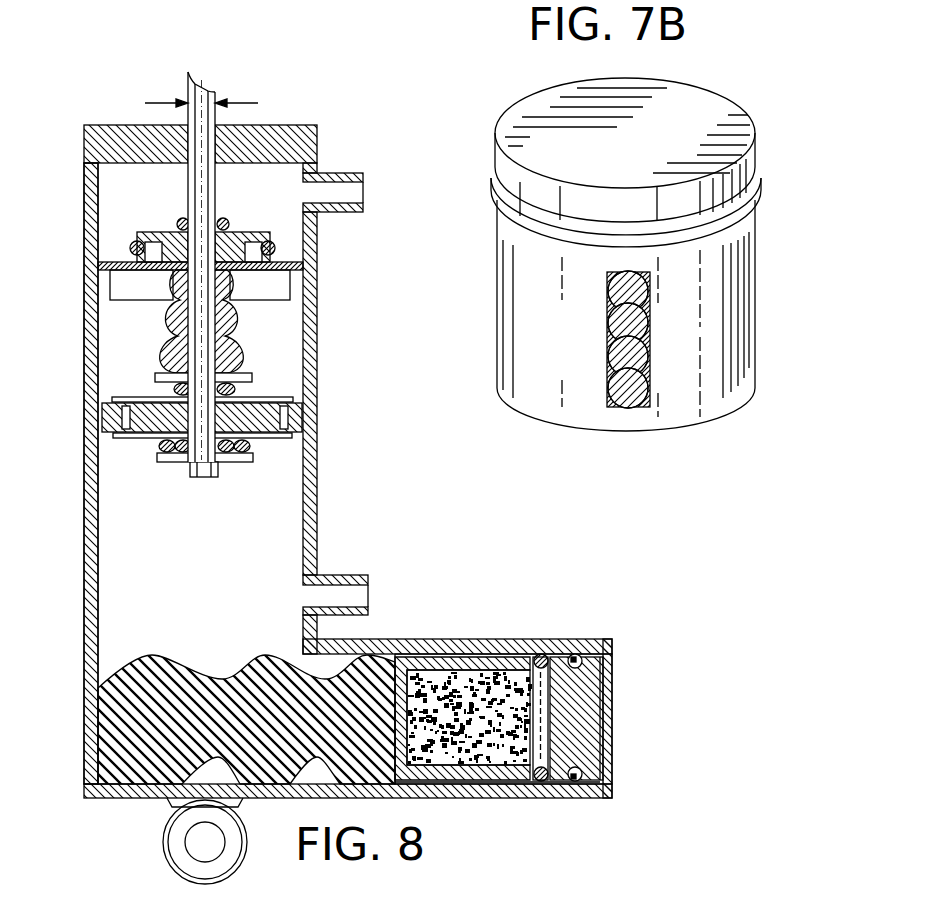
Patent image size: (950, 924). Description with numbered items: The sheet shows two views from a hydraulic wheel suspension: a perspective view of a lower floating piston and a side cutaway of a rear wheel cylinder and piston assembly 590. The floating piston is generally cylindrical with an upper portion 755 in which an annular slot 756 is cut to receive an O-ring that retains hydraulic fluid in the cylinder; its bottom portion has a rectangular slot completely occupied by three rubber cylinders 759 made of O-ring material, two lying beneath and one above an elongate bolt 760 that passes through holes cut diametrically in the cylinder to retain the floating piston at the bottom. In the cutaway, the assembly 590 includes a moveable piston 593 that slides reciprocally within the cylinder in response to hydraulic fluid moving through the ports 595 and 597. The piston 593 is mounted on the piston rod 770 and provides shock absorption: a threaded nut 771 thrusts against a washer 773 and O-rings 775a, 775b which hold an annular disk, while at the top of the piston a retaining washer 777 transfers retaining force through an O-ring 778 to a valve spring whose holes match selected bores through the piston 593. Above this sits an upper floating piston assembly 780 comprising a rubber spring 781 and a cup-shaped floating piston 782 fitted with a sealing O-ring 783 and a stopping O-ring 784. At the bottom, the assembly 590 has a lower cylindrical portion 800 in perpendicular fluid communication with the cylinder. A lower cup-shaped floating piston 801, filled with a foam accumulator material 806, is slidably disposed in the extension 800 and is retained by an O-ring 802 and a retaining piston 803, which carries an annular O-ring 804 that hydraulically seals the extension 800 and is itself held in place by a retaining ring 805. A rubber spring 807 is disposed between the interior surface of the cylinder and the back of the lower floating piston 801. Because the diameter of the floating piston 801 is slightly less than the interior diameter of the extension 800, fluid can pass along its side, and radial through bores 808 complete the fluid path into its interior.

In FIG. 8, the piston rod 770 is at (188, 93).
In FIG. 8, the cup-shaped floating piston 782 is at (105, 262).
In FIG. 8, the stopping O-ring 784 is at (177, 224).
In FIG. 8, the sealing O-ring 783 is at (270, 246).
In FIG. 8, the port 595 is at (347, 173).
In FIG. 8, the rear wheel cylinder and piston assembly 590 is at (317, 302).
In FIG. 8, the upper floating piston assembly 780 is at (106, 306).
In FIG. 8, the rubber spring 781 is at (168, 335).
In FIG. 8, the retaining washer 777 is at (250, 373).
In FIG. 8, the O-ring 778 is at (235, 389).
In FIG. 8, the moveable piston 593 is at (135, 448).
In FIG. 8, the washer 773 is at (167, 462).
In FIG. 8, the threaded nut 771 is at (202, 477).
In FIG. 8, the O-ring 775a is at (234, 462).
In FIG. 8, the O-ring 775b is at (250, 451).
In FIG. 8, the port 597 is at (368, 581).
In FIG. 8, the rubber spring 807 is at (178, 653).
In FIG. 8, the lower cylindrical portion 800 is at (467, 639).
In FIG. 8, the foam accumulator material 806 is at (522, 657).
In FIG. 8, the O-ring 802 is at (541, 655).
In FIG. 8, the annular O-ring 804 is at (582, 652).
In FIG. 8, the retaining ring 805 is at (605, 662).
In FIG. 8, the retaining piston 803 is at (612, 733).
In FIG. 8, the lower cup-shaped floating piston 801 is at (480, 780).
In FIG. 8, the radial through bores 808 is at (532, 796).
In FIG. 7B, the upper portion 755 is at (698, 98).
In FIG. 7B, the annular slot 756 is at (737, 200).
In FIG. 7B, the rubber cylinders 759 is at (607, 292).
In FIG. 7B, the elongate bolt 760 is at (607, 322).